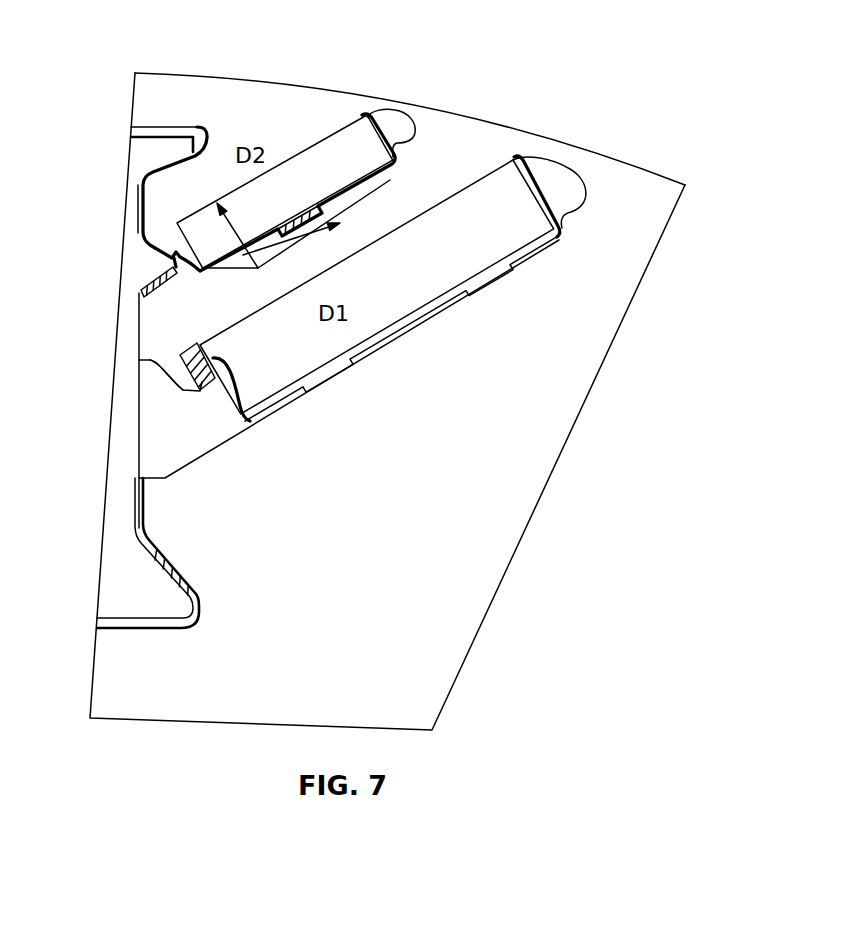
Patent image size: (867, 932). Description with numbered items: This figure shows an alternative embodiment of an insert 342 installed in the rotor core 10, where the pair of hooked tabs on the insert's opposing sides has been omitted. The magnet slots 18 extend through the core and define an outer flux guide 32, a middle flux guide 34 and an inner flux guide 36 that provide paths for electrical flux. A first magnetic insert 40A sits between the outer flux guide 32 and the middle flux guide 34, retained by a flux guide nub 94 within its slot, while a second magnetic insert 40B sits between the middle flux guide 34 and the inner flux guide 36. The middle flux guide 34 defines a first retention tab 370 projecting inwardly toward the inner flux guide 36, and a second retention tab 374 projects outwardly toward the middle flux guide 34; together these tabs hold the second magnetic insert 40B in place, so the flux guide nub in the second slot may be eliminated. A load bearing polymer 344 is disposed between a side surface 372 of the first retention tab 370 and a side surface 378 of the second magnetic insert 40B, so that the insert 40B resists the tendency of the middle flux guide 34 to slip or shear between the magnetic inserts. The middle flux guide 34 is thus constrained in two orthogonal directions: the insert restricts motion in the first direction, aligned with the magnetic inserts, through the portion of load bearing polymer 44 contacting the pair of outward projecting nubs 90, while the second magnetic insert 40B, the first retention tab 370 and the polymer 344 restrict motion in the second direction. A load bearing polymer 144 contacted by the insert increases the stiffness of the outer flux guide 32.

The rotor core 10 is at (686, 152).
The magnet slots 18 is at (405, 118).
The outer flux guide 32 is at (192, 195).
The middle flux guide 34 is at (174, 331).
The inner flux guide 36 is at (186, 531).
The first magnetic insert 40A is at (350, 128).
The second magnetic insert 40B is at (505, 175).
The load bearing polymer 44 is at (306, 213).
The outward projecting nubs 90 is at (152, 248).
The flux guide nub 94 is at (185, 267).
The load bearing polymer 144 is at (533, 470).
The insert 342 is at (126, 143).
The load bearing polymer 344 is at (196, 395).
The first retention tab 370 is at (178, 382).
The side surface 372 is at (180, 383).
The second retention tab 374 is at (567, 218).
The side surface 378 is at (258, 405).